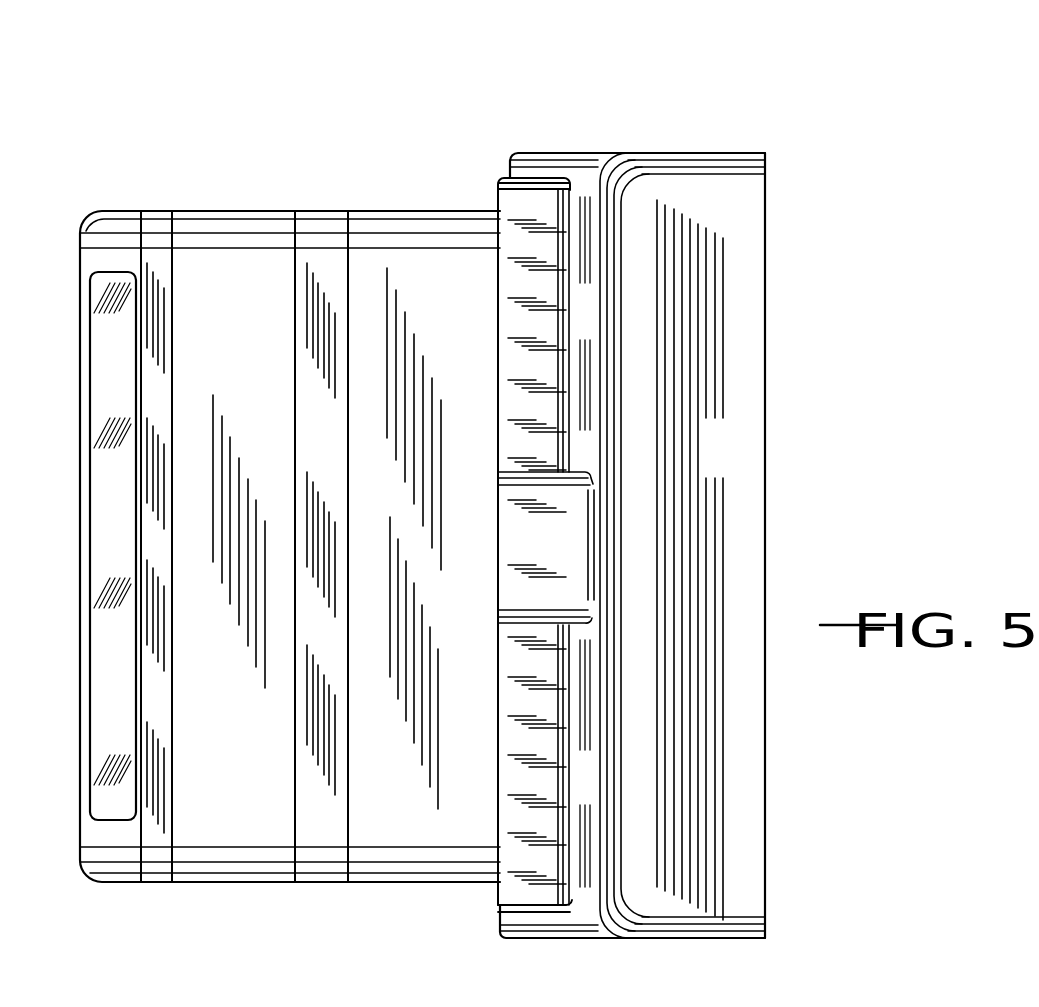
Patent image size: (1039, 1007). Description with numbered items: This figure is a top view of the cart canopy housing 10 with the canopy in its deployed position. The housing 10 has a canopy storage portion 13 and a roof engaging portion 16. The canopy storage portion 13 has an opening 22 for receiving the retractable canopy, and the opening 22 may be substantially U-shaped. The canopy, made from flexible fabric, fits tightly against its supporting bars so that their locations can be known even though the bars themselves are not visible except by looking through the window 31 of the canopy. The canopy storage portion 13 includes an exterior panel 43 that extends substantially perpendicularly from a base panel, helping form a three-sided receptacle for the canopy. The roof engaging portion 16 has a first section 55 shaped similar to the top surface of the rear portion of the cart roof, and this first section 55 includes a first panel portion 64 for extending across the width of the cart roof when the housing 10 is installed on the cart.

The cart canopy housing 10 is at (667, 117).
The canopy storage portion 13 is at (540, 256).
The roof engaging portion 16 is at (765, 310).
The opening 22 is at (253, 212).
The window 31 is at (125, 508).
The exterior panel 43 is at (500, 818).
The first section 55 is at (784, 679).
The first panel portion 64 is at (752, 461).